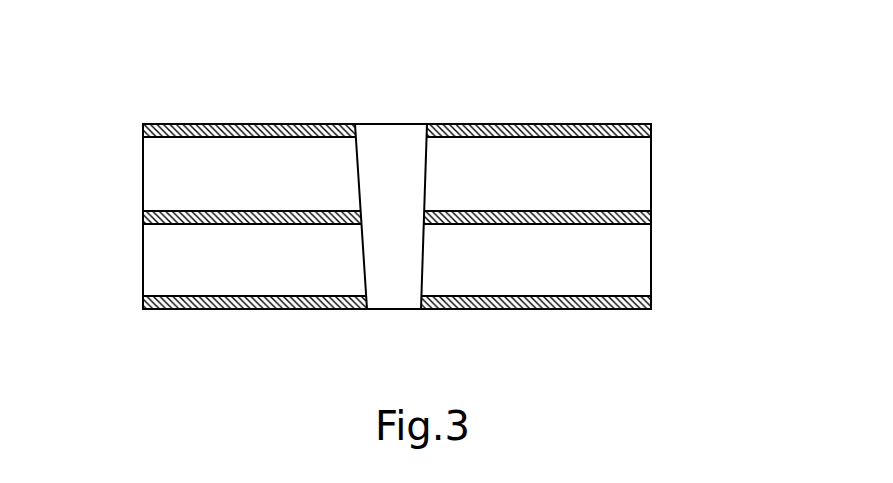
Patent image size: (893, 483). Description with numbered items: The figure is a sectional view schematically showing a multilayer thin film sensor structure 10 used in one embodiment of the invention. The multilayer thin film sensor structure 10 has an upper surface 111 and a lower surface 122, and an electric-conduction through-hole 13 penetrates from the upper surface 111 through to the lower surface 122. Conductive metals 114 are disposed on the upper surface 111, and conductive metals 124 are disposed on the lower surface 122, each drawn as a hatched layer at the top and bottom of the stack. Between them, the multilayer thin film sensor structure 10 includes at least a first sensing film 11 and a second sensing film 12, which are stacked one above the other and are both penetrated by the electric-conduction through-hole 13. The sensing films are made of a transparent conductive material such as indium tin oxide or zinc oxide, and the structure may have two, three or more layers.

The multilayer thin film sensor structure 10 is at (410, 208).
The first sensing film 11 is at (341, 132).
The second sensing film 12 is at (341, 300).
The electric-conduction through-hole 13 is at (390, 124).
The upper surface 111 is at (197, 124).
The conductive metals 114 is at (143, 131).
The lower surface 122 is at (247, 312).
The conductive metals 124 is at (143, 298).